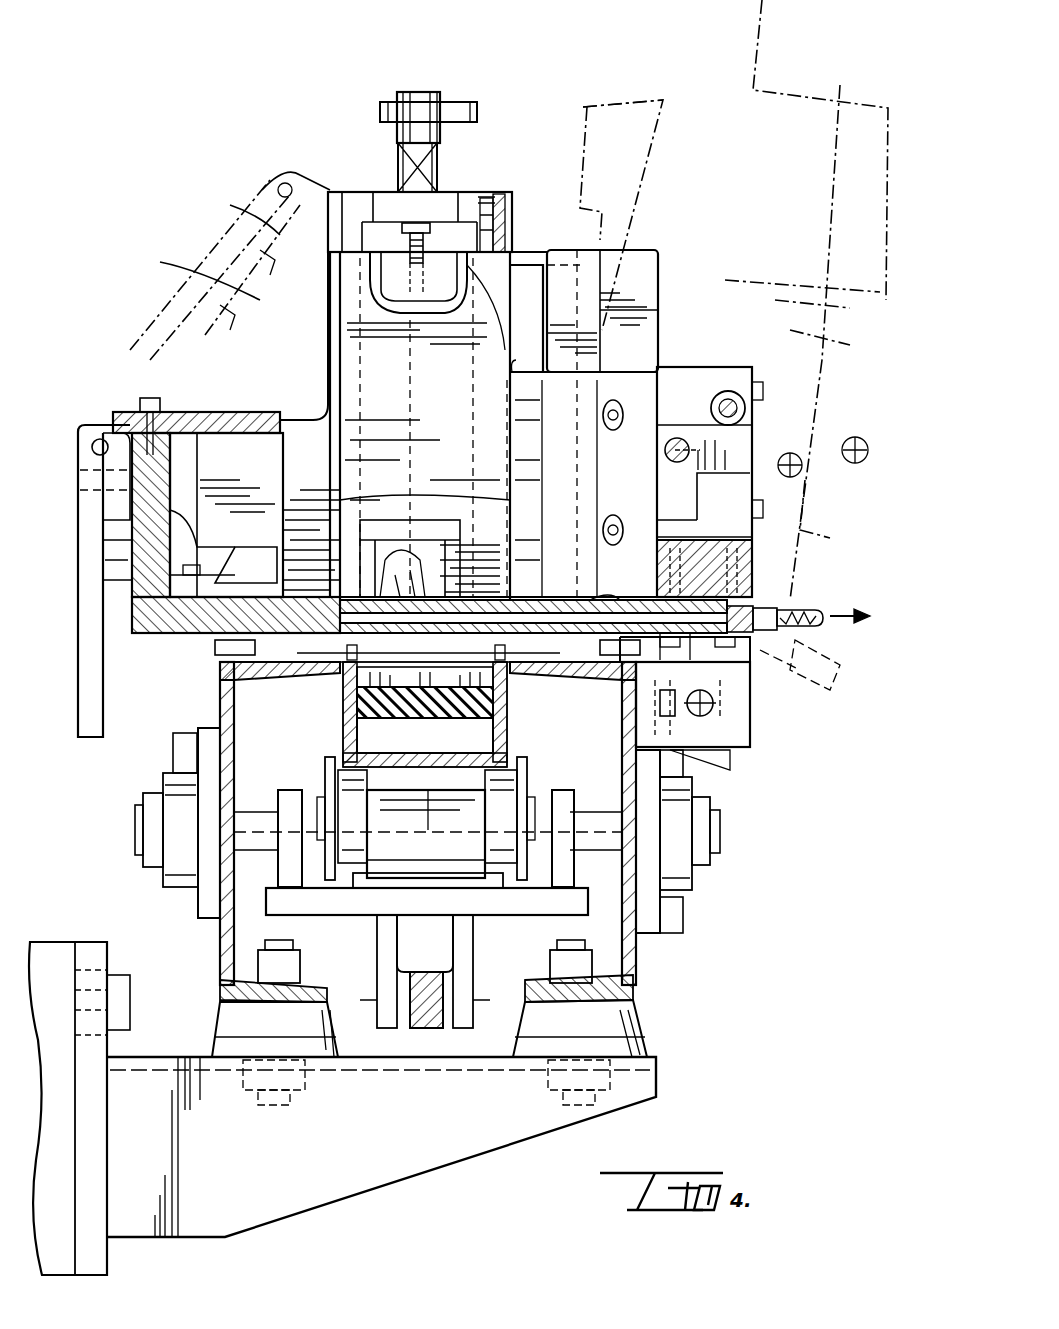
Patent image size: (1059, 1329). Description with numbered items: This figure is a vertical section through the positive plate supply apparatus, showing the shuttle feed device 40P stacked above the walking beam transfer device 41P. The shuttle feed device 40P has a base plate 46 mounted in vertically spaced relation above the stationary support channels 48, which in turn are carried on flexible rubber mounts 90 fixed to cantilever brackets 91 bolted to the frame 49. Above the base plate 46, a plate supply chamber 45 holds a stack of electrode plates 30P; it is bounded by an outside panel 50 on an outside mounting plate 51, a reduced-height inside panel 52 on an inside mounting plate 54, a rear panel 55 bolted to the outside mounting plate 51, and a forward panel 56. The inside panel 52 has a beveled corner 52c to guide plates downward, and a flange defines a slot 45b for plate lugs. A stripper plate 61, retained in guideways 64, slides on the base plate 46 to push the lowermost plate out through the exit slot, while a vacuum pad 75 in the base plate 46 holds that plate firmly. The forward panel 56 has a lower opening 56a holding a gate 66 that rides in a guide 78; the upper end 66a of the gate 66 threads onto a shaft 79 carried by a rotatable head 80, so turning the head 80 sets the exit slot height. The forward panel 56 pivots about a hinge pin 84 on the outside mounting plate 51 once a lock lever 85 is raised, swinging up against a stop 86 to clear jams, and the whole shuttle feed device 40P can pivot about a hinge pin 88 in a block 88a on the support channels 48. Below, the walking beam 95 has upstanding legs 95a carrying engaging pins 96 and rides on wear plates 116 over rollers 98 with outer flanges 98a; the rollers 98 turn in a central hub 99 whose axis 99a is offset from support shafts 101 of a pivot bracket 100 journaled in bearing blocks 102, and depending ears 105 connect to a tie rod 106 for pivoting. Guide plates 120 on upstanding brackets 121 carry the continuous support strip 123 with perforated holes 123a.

The rotatable head 80 is at (420, 100).
The shaft 79 is at (382, 230).
The guide 78 is at (440, 280).
The upper end of gate 66a is at (470, 250).
The plate supply chamber 45 is at (533, 262).
The slot 45b is at (600, 255).
The outside panel 50 is at (630, 270).
The outside mounting plate 51 is at (693, 372).
The stop 86 is at (745, 408).
The hinge pin 84 is at (683, 460).
The guideway 64 is at (232, 583).
The beveled corner 52c is at (290, 410).
The rear panel 55 is at (448, 402).
The lower opening 56a is at (395, 500).
The inside panel 52 is at (258, 480).
The inside mounting plate 54 is at (182, 515).
The gate 66 is at (370, 565).
The vacuum pad 75 is at (400, 580).
The forward panel 56 is at (300, 240).
The electrode plate 30P is at (260, 300).
The shuttle feed device 40P is at (160, 330).
The lock lever 85 is at (78, 676).
The base plate 46 is at (205, 632).
The stripper plate 61 is at (285, 621).
The electrode plate engaging pin 96 is at (345, 650).
The stationary support channel 48 is at (220, 702).
The perforated holes 123a is at (343, 688).
The continuous support strip 123 is at (507, 700).
The guide plate 120 is at (357, 733).
The upstanding leg 95a is at (357, 705).
The walking beam 95 is at (515, 742).
The outer flange 98a is at (325, 762).
The roller 98 is at (480, 820).
The wear plate 116 is at (470, 790).
The roller axis 99a is at (485, 850).
The upstanding bracket 121 is at (288, 810).
The central hub 99 is at (423, 868).
The pivot bracket 100 is at (508, 915).
The depending ear 105 is at (377, 935).
The tie rod 106 is at (425, 972).
The bearing block 102 is at (175, 790).
The support shaft 101 is at (220, 860).
The walking beam transfer device 41P is at (120, 838).
The hinge pin 88 is at (716, 703).
The block 88a is at (740, 728).
The flexible rubber mount 90 is at (215, 1020).
The cantilever bracket 91 is at (438, 1165).
The frame 49 is at (53, 945).